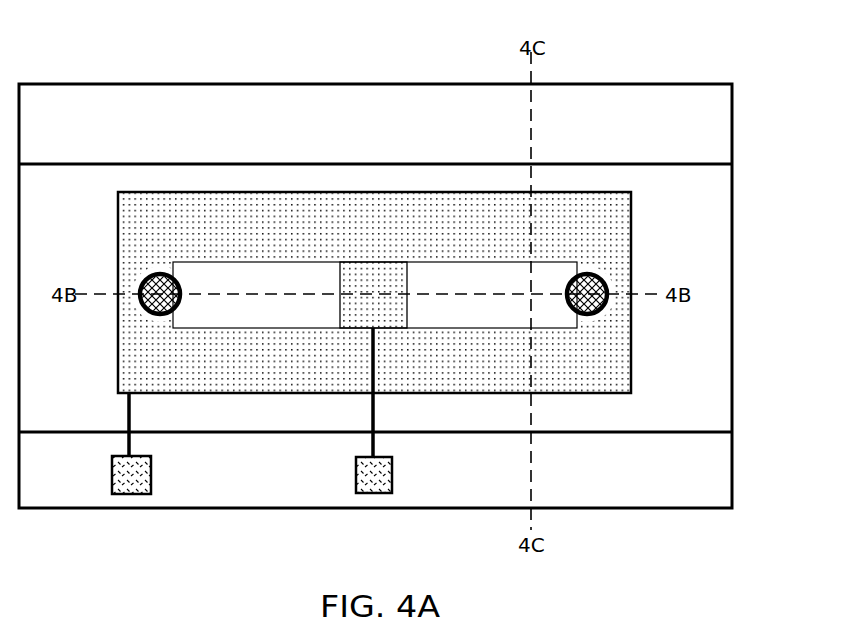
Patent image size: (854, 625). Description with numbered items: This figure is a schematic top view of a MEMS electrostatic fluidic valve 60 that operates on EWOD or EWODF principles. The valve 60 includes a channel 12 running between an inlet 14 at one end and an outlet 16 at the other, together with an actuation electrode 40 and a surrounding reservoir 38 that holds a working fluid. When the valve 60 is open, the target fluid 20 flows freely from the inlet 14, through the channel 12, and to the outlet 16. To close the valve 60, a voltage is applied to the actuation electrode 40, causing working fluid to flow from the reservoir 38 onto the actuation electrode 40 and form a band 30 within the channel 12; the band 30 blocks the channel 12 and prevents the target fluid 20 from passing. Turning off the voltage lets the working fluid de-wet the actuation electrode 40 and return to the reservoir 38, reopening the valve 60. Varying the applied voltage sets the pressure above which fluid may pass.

The MEMS electrostatic fluidic valve 60 is at (658, 44).
The reservoir 38 is at (134, 224).
The channel 12 is at (548, 277).
The band 30 is at (377, 264).
The inlet 14 is at (137, 308).
The outlet 16 is at (601, 309).
The target fluid 20 is at (243, 307).
The actuation electrode 40 is at (391, 330).